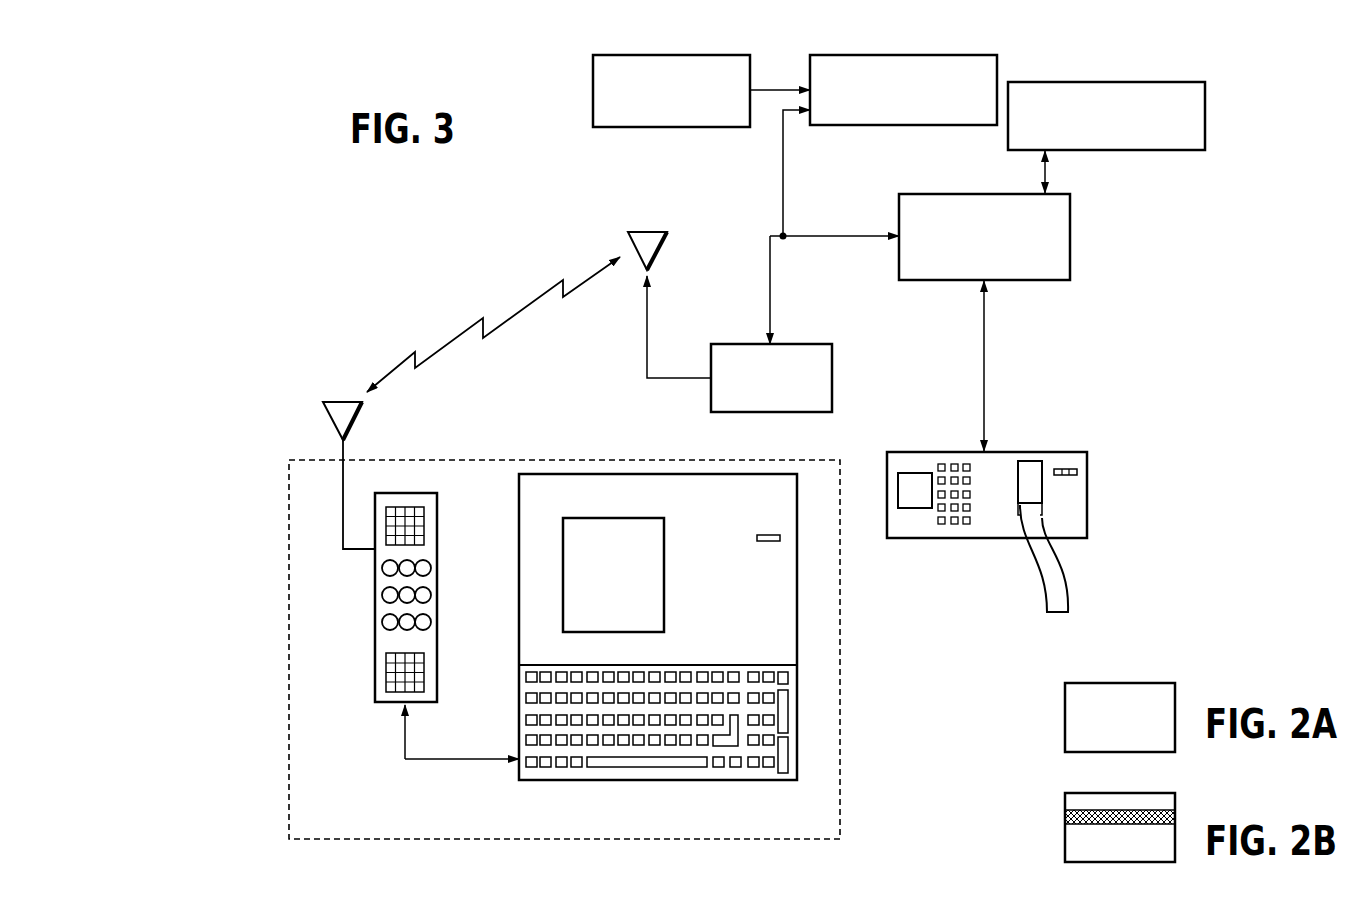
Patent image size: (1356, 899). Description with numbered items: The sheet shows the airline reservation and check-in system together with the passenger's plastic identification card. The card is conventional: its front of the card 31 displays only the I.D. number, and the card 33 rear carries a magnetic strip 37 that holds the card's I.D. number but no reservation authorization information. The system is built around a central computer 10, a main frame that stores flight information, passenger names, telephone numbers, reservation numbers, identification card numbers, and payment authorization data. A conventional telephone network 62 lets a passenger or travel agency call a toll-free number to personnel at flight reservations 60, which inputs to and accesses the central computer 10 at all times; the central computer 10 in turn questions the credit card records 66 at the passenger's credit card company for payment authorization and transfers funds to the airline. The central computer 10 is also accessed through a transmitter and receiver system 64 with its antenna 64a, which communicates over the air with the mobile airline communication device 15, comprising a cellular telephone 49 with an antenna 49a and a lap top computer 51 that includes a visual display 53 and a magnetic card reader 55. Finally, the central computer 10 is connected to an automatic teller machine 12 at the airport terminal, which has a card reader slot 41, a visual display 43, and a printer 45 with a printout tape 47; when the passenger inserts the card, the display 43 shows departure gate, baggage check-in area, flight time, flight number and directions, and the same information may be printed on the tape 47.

In FIG. 3, the central computer 10 is at (987, 181).
In FIG. 3, the automatic teller machine 12 is at (1053, 448).
In FIG. 3, the mobile airline communication device 15 is at (288, 662).
In FIG. 2A, the front of the card 31 is at (1067, 684).
In FIG. 2B, the ID card 33 is at (1065, 843).
In FIG. 2B, the magnetic strip 37 is at (1173, 815).
In FIG. 3, the card reader slot 41 is at (1067, 472).
In FIG. 3, the visual display 43 is at (918, 472).
In FIG. 3, the printer 45 is at (1038, 493).
In FIG. 3, the printout tape 47 is at (1065, 583).
In FIG. 3, the cellular telephone 49 is at (387, 703).
In FIG. 3, the antenna 49a is at (325, 402).
In FIG. 3, the lap top computer 51 is at (630, 753).
In FIG. 3, the visual display 53 is at (614, 533).
In FIG. 3, the magnetic card reader 55 is at (780, 537).
In FIG. 3, the flight reservations 60 is at (903, 55).
In FIG. 3, the telephone network 62 is at (676, 55).
In FIG. 3, the transmitter and receiver system 64 is at (832, 368).
In FIG. 3, the transceiver antenna 64a is at (663, 218).
In FIG. 3, the credit card records 66 is at (1102, 81).